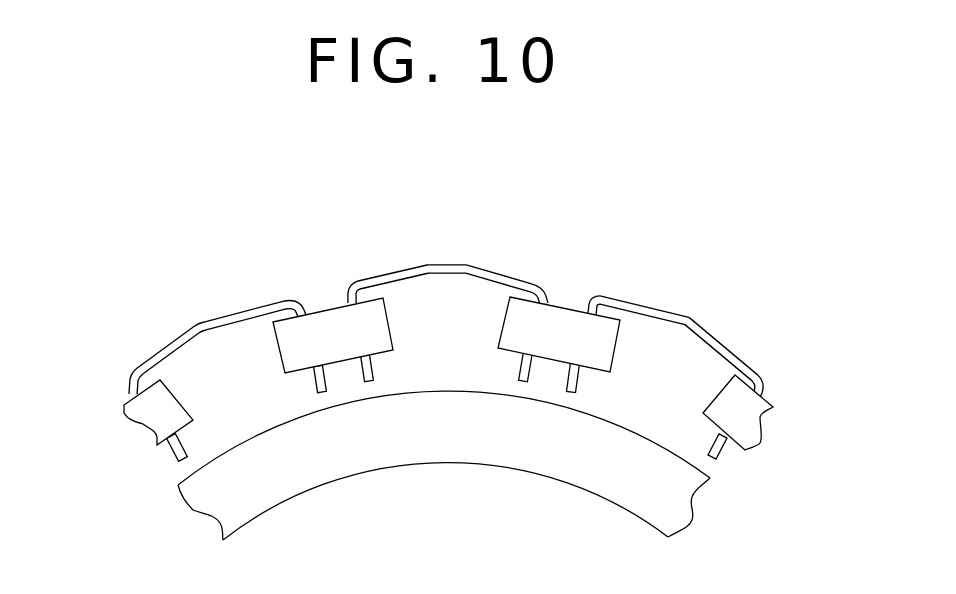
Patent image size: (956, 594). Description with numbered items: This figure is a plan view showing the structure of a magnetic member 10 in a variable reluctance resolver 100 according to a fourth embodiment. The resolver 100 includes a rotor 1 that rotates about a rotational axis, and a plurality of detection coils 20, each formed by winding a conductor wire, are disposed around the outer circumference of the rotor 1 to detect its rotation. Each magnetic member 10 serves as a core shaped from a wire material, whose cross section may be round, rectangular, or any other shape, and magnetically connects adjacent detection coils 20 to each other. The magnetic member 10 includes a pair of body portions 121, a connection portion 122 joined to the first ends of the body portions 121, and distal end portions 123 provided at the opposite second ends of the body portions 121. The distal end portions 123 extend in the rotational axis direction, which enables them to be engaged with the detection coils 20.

The rotor 1 is at (345, 468).
The magnetic member 10 is at (197, 317).
The detection coil 20 is at (330, 312).
The variable reluctance resolver 100 is at (692, 242).
The body portion 121 is at (373, 362).
The connection portion 122 is at (388, 279).
The distal end portion 123 is at (188, 462).